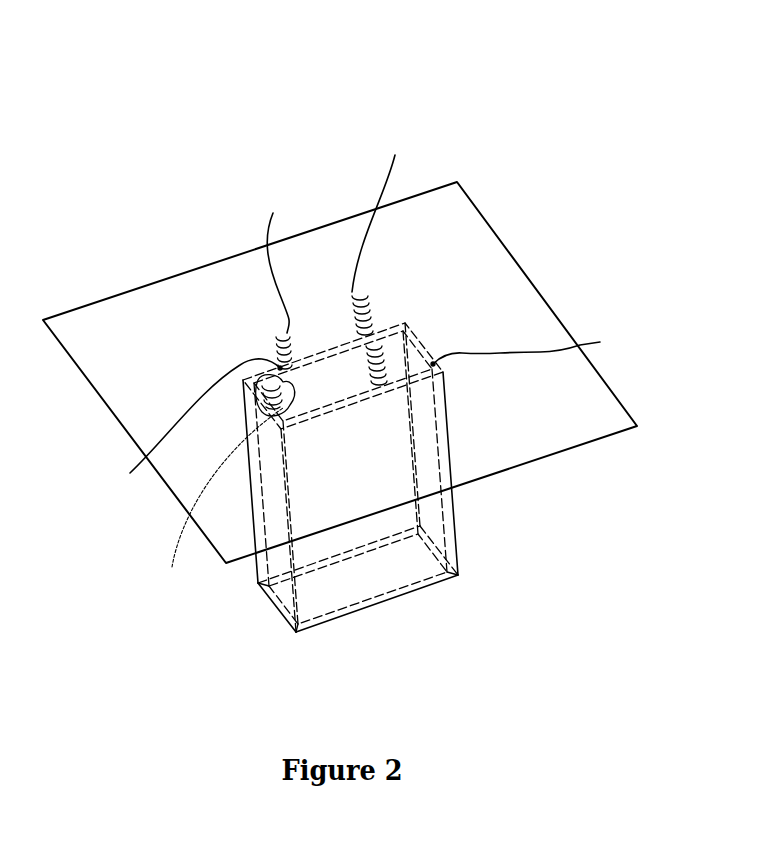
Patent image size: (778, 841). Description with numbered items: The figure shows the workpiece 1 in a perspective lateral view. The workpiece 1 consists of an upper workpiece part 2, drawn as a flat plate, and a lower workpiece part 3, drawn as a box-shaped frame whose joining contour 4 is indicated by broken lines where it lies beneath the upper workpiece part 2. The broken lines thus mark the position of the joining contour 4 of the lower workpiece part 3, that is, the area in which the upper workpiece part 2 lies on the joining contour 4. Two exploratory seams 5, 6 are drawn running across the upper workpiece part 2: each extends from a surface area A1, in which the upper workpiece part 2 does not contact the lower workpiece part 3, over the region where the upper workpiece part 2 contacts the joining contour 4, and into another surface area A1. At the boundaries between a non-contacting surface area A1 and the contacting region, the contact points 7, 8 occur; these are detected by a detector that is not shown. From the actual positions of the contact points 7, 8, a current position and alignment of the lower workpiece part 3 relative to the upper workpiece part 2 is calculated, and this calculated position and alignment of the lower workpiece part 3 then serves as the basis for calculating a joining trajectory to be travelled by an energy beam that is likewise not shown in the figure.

The workpiece 1 is at (558, 135).
The upper workpiece part 2 is at (528, 312).
The lower workpiece part 3 is at (341, 584).
The joining contour 4 is at (596, 343).
The exploratory seam 5 is at (272, 273).
The exploratory seam 6 is at (373, 242).
The contact point 7 is at (192, 428).
The contact point 8 is at (215, 509).
The surface area A1 is at (507, 427).